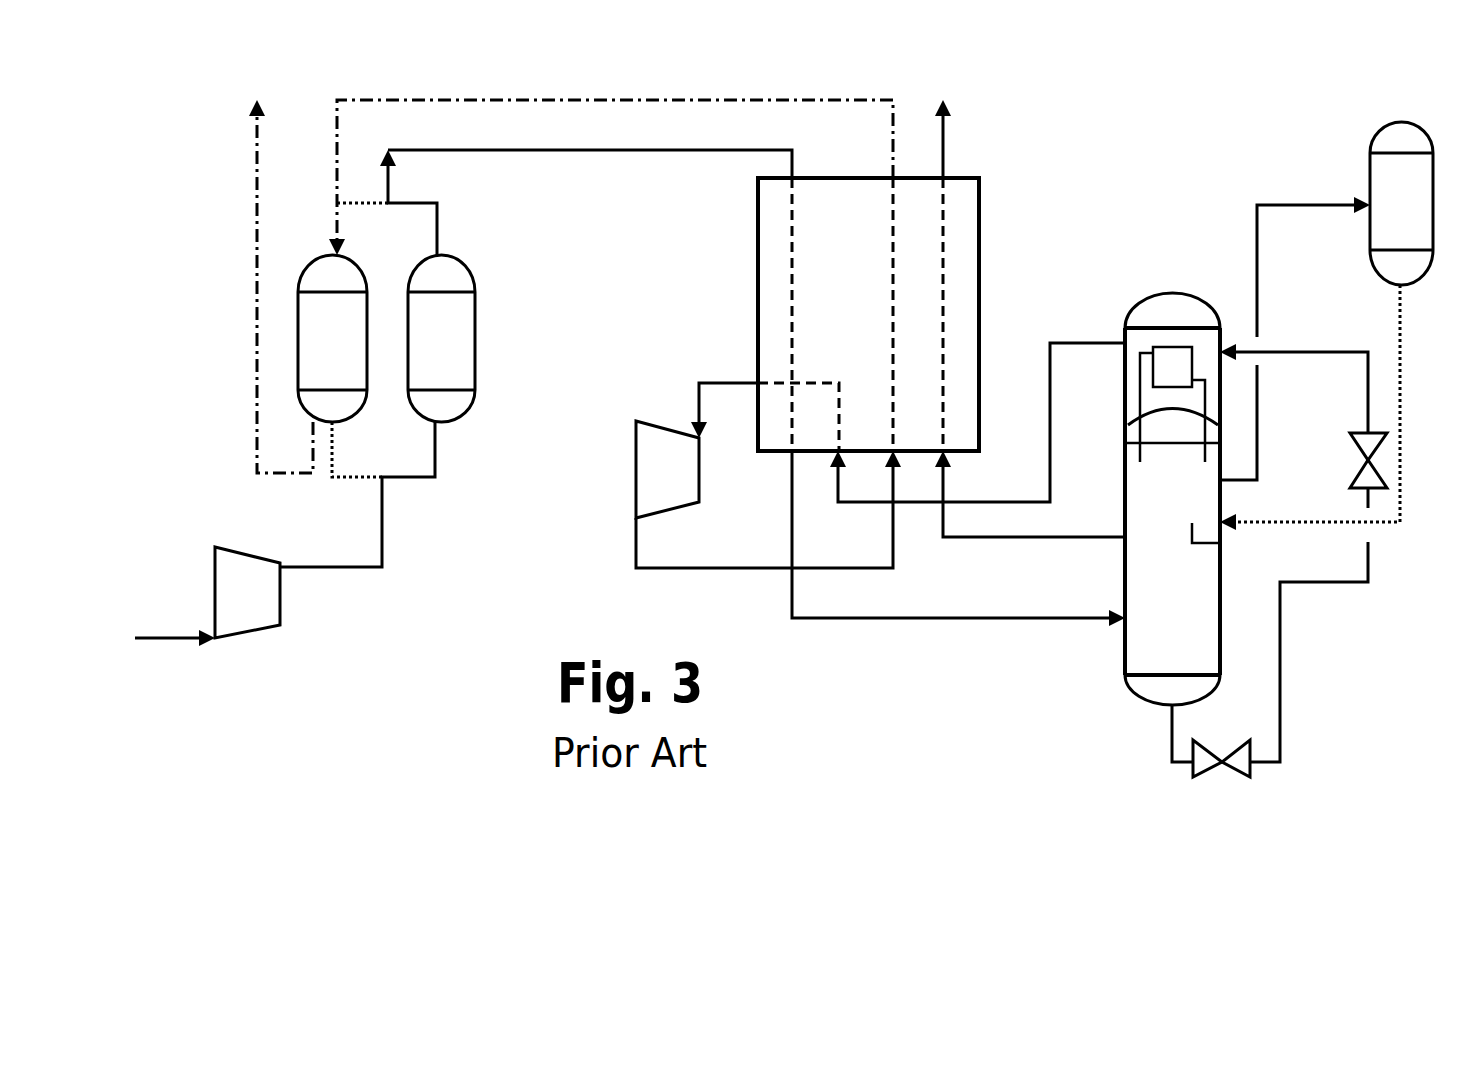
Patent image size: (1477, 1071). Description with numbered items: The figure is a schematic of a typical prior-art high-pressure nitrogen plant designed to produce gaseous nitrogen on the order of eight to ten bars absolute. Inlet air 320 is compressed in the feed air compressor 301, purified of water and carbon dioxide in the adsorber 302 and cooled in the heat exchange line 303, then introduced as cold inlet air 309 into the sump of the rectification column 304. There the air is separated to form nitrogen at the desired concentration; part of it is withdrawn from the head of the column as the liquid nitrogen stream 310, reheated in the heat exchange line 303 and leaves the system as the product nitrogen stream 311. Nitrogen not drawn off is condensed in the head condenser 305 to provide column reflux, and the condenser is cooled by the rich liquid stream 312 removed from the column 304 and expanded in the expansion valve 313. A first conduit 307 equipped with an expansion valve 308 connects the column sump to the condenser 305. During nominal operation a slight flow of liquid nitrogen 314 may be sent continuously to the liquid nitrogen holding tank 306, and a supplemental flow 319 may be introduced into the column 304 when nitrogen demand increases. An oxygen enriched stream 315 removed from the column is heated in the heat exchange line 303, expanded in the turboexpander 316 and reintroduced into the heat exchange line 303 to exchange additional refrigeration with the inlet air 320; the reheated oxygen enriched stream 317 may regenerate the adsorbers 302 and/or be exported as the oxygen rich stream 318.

The feed air compressor 301 is at (325, 530).
The adsorber 302 is at (545, 313).
The heat exchange line 303 is at (868, 314).
The rectification column 304 is at (1172, 499).
The head condenser 305 is at (1176, 352).
The liquid nitrogen holding tank 306 is at (1401, 203).
The first conduit 307 is at (1148, 733).
The expansion valve 308 is at (1221, 777).
The cold inlet air 309 is at (958, 555).
The liquid nitrogen stream 310 is at (1030, 513).
The product nitrogen stream 311 is at (942, 123).
The rich liquid stream 312 is at (1294, 388).
The expansion valve 313 is at (1318, 597).
The flow of liquid nitrogen 314 is at (1295, 325).
The oxygen enriched stream 315 is at (977, 422).
The turboexpander 316 is at (768, 475).
The reheated oxygen enriched stream 317 is at (611, 158).
The oxygen rich stream 318 is at (272, 268).
The supplemental flow 319 is at (1338, 407).
The inlet air 320 is at (146, 639).